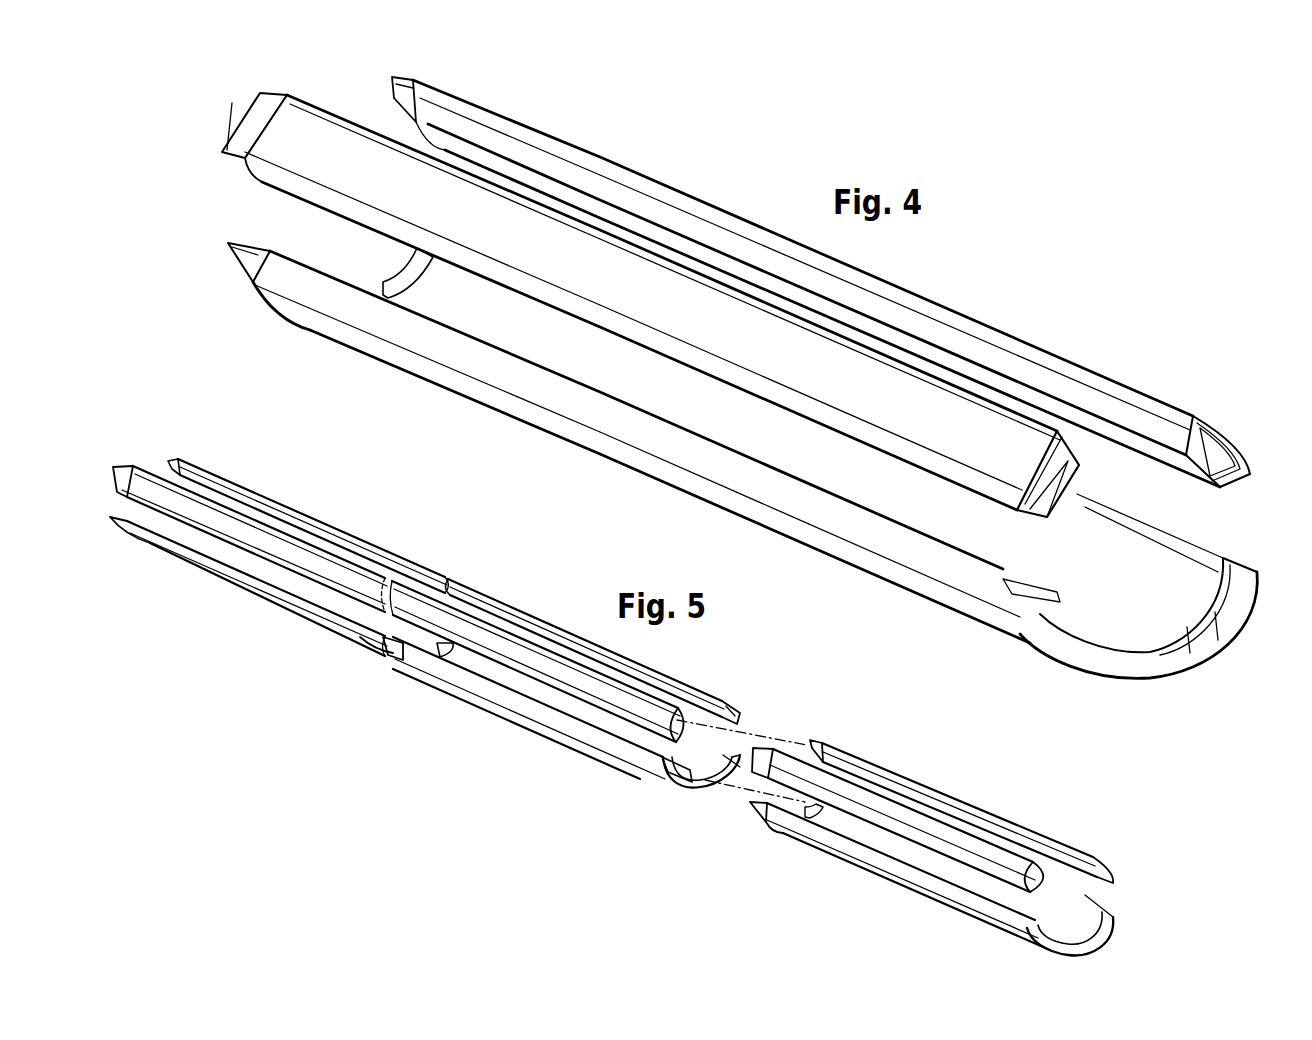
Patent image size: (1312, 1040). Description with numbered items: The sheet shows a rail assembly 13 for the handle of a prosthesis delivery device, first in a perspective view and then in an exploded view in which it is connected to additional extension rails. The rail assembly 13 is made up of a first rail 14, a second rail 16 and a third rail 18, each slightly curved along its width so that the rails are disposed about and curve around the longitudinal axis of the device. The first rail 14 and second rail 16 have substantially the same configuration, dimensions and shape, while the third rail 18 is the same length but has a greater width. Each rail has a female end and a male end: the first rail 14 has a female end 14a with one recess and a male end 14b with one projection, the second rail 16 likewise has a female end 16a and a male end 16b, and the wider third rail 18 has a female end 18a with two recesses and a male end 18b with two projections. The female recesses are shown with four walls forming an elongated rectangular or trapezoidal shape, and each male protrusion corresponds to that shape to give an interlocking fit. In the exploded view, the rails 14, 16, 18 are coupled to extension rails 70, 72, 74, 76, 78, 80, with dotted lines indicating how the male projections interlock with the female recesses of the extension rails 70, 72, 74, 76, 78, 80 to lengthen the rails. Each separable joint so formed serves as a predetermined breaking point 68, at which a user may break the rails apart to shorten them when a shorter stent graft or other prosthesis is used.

In FIG. 4, the rail assembly 13 is at (705, 148).
In FIG. 4, the first rail 14 is at (1033, 343).
In FIG. 4, the female end of the first rail 14a is at (1220, 457).
In FIG. 4, the male end of the first rail 14b is at (400, 88).
In FIG. 4, the second rail 16 is at (292, 160).
In FIG. 4, the female end of the second rail 16a is at (1047, 473).
In FIG. 4, the male end of the second rail 16b is at (255, 108).
In FIG. 4, the third rail 18 is at (435, 385).
In FIG. 4, the female end of the third rail 18a is at (1222, 615).
In FIG. 4, the male end of the third rail 18b is at (235, 264).
In FIG. 5, the predetermined breaking point 68 is at (400, 660).
In FIG. 5, the extension rail 70 is at (235, 484).
In FIG. 5, the extension rail 72 is at (150, 480).
In FIG. 5, the extension rail 74 is at (245, 597).
In FIG. 5, the extension rail 76 is at (540, 620).
In FIG. 5, the extension rail 78 is at (563, 677).
In FIG. 5, the extension rail 80 is at (503, 710).